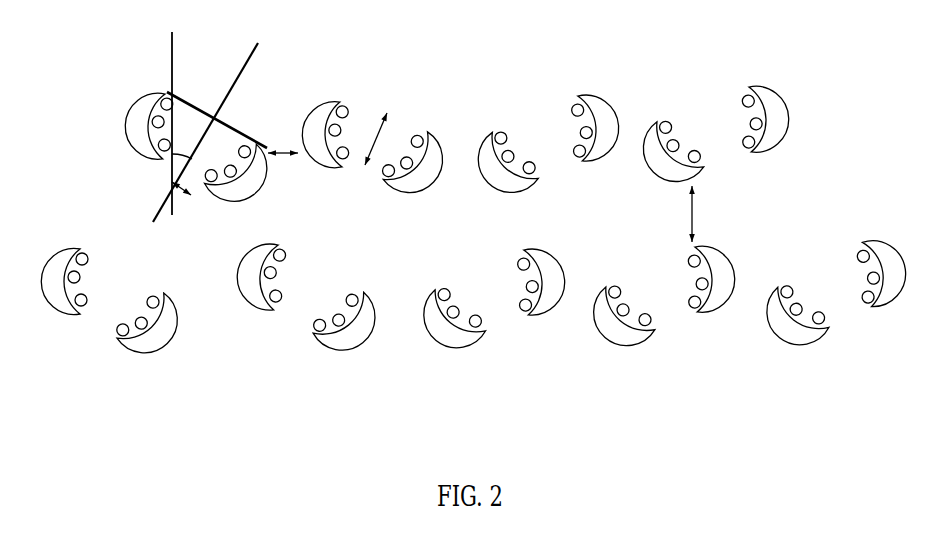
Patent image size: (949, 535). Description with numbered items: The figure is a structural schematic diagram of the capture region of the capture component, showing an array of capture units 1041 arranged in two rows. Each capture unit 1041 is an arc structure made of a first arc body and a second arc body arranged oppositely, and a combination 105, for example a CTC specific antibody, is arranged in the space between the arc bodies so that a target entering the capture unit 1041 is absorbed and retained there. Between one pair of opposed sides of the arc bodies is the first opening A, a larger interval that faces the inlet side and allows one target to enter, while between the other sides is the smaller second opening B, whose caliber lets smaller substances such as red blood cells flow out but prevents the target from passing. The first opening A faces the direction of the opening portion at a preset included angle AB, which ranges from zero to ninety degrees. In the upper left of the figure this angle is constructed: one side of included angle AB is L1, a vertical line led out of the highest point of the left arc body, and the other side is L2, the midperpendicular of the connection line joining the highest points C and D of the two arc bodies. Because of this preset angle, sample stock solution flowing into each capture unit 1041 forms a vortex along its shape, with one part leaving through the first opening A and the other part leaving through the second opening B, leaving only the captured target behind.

The combination 105 is at (346, 108).
The capture unit 1041 is at (161, 95).
The vertical line L1 is at (158, 123).
The midperpendicular L2 is at (216, 132).
The highest point of arc body C is at (241, 131).
The first opening A is at (231, 105).
The highest point of arc body D is at (278, 138).
The included angle AB is at (188, 145).
The second opening B is at (174, 188).